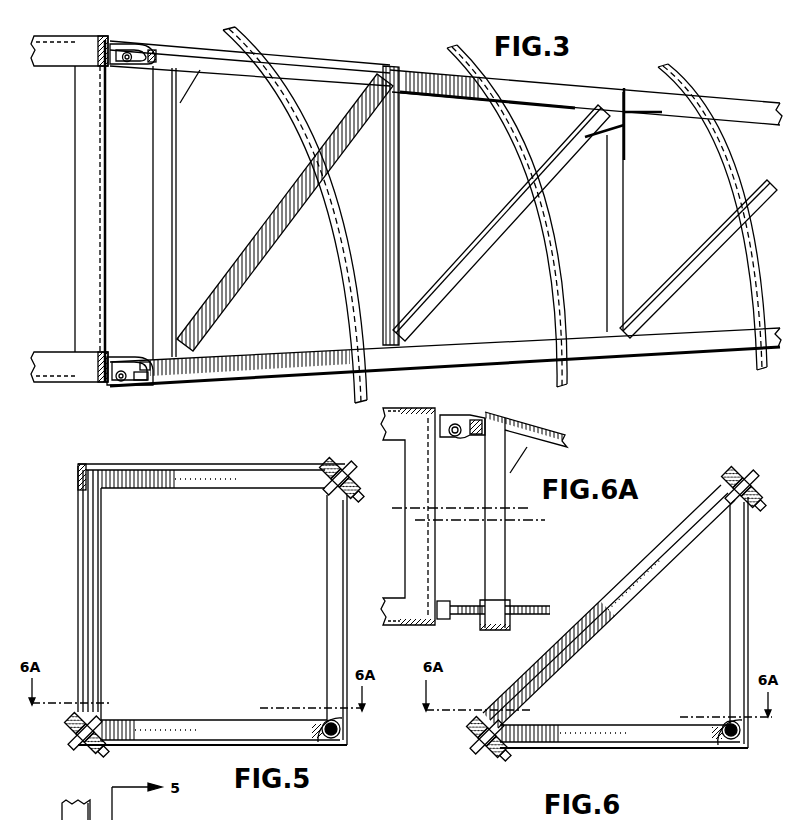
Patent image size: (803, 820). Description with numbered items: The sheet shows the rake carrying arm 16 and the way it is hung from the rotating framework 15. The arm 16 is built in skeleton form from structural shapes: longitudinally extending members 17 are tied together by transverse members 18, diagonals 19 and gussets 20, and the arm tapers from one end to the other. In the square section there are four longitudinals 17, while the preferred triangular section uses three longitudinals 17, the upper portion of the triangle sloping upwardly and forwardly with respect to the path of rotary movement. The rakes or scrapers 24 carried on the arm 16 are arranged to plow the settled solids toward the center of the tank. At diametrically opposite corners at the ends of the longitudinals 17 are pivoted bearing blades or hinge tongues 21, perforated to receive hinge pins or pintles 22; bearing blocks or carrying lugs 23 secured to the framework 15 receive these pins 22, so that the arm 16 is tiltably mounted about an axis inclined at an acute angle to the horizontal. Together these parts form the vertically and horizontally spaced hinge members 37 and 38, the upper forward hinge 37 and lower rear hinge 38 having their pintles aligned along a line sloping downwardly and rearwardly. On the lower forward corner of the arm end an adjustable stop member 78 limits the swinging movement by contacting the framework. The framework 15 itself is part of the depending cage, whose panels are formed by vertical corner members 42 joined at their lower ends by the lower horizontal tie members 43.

In FIG. 3, the rotating framework 15 is at (48, 54).
In FIG. 6A, the rotating framework 15 is at (410, 474).
In FIG. 6, the rake carrying arm 16 is at (728, 556).
In FIG. 3, the longitudinally extending member 17 is at (678, 118).
In FIG. 5, the longitudinally extending member 17 is at (78, 467).
In FIG. 6, the longitudinally extending member 17 is at (750, 506).
In FIG. 3, the transverse member 18 is at (170, 217).
In FIG. 5, the transverse member 18 is at (190, 488).
In FIG. 6, the transverse member 18 is at (638, 565).
In FIG. 3, the diagonal 19 is at (712, 244).
In FIG. 3, the gusset 20 is at (624, 138).
In FIG. 3, the hinge tongue 21 is at (141, 380).
In FIG. 5, the hinge tongue 21 is at (325, 468).
In FIG. 6, the hinge tongue 21 is at (614, 612).
In FIG. 3, the hinge pin 22 is at (128, 62).
In FIG. 5, the hinge pin 22 is at (330, 486).
In FIG. 6, the hinge pin 22 is at (722, 483).
In FIG. 3, the bearing block 23 is at (118, 64).
In FIG. 5, the bearing block 23 is at (340, 462).
In FIG. 6A, the bearing block 23 is at (452, 416).
In FIG. 6, the bearing block 23 is at (752, 482).
In FIG. 3, the rake 24 is at (348, 254).
In FIG. 3, the hinge member 37 is at (153, 63).
In FIG. 5, the hinge member 37 is at (104, 744).
In FIG. 6A, the hinge member 37 is at (468, 437).
In FIG. 6, the hinge member 37 is at (478, 730).
In FIG. 3, the hinge member 38 is at (152, 358).
In FIG. 5, the hinge member 38 is at (358, 498).
In FIG. 6, the hinge member 38 is at (738, 469).
In FIG. 3, the corner member 42 is at (98, 52).
In FIG. 3, the lower horizontally extending tie member 43 is at (82, 211).
In FIG. 5, the adjustable stop member 78 is at (326, 726).
In FIG. 6A, the adjustable stop member 78 is at (457, 606).
In FIG. 6, the adjustable stop member 78 is at (727, 727).